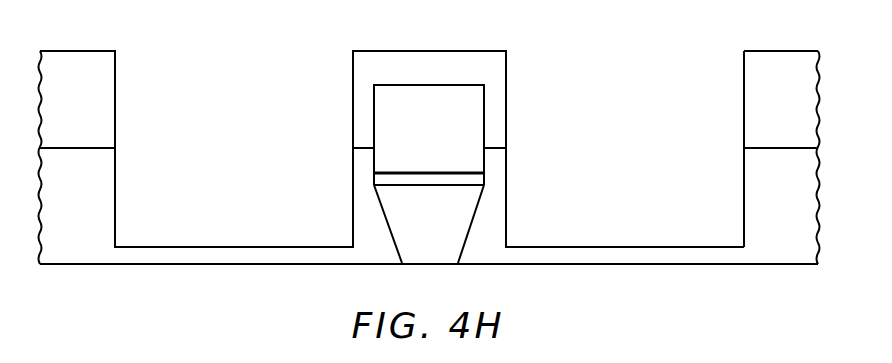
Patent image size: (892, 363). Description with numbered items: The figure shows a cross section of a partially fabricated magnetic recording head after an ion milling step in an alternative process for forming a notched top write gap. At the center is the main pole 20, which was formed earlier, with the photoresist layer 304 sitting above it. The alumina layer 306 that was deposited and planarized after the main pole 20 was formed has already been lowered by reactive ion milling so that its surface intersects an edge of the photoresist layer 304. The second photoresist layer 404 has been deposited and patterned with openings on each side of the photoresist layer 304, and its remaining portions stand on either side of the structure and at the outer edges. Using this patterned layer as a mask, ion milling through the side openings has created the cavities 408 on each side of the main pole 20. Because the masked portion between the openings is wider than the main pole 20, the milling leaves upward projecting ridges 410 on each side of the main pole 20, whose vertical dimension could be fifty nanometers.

The main pole 20 is at (442, 228).
The photoresist layer 304 is at (446, 143).
The alumina layer 306 is at (800, 208).
The second photoresist layer 404 is at (80, 56).
The cavities 408 is at (238, 197).
The ridges 410 is at (362, 158).